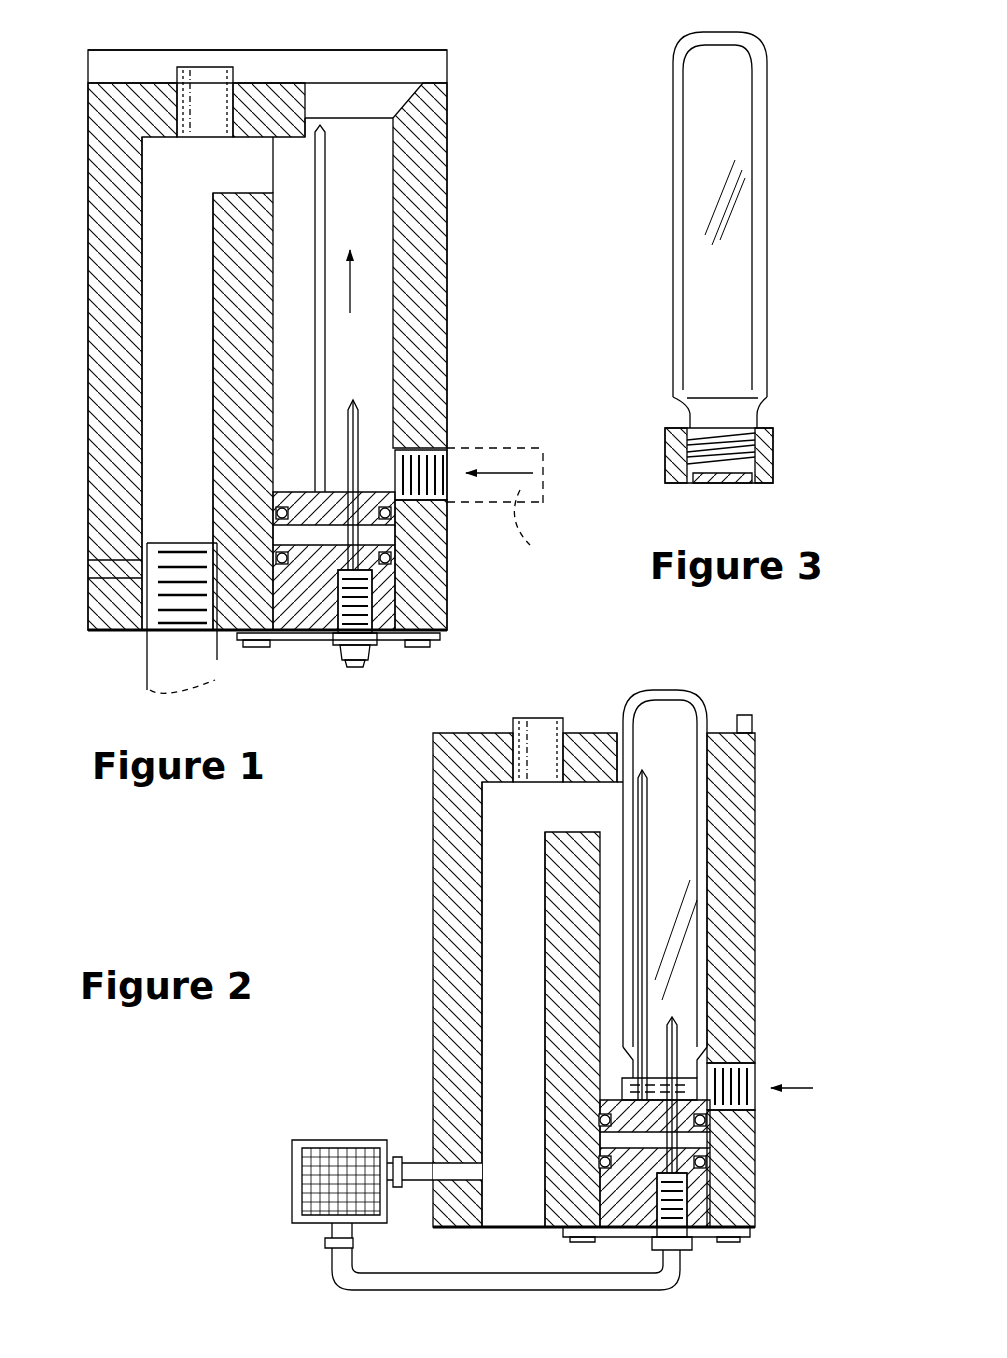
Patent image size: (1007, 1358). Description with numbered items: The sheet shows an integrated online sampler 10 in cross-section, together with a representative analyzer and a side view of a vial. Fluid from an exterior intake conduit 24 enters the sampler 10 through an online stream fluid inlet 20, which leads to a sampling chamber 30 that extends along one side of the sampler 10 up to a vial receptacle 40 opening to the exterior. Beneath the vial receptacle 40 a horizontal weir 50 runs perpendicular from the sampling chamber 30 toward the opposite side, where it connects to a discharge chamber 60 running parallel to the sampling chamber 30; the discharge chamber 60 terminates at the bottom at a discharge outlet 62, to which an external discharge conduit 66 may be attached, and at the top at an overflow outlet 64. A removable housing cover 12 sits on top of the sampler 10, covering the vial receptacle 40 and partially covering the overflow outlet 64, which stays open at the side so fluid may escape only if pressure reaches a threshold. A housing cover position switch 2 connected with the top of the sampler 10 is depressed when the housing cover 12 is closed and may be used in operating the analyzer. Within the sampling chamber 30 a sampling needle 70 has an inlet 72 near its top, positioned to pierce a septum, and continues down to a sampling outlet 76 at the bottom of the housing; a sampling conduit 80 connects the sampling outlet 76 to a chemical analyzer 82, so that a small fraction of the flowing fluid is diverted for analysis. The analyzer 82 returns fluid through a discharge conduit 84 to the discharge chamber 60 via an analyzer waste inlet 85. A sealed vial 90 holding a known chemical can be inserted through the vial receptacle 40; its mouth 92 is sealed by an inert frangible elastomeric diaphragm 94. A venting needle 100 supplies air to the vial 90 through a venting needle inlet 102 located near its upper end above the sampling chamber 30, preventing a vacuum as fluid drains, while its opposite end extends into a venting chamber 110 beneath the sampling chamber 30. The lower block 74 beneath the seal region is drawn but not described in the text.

In FIG. 1, the integrated online sampler 10 is at (75, 243).
In FIG. 2, the integrated online sampler 10 is at (418, 797).
In FIG. 1, the removable housing cover 12 is at (107, 75).
In FIG. 2, the housing cover position switch 2 is at (758, 745).
In FIG. 1, the online stream fluid inlet 20 is at (447, 460).
In FIG. 1, the exterior intake conduit 24 is at (530, 545).
In FIG. 1, the sampling chamber 30 is at (350, 277).
In FIG. 1, the vial receptacle 40 is at (345, 105).
In FIG. 1, the horizontal weir 50 is at (260, 181).
In FIG. 2, the horizontal weir 50 is at (572, 1029).
In FIG. 1, the discharge chamber 60 is at (180, 228).
In FIG. 2, the discharge chamber 60 is at (525, 905).
In FIG. 1, the discharge outlet 62 is at (160, 610).
In FIG. 1, the overflow outlet 64 is at (190, 120).
In FIG. 1, the external discharge conduit 66 is at (255, 652).
In FIG. 1, the sampling needle 70 is at (330, 545).
In FIG. 1, the inlet 72 is at (353, 405).
In FIG. 2, the inlet 72 is at (675, 1027).
In FIG. 1, the lower block 74 is at (405, 645).
In FIG. 2, the sampling outlet 76 is at (700, 1253).
In FIG. 2, the sampling conduit 80 is at (505, 1277).
In FIG. 2, the chemical analyzer 82 is at (340, 1140).
In FIG. 2, the discharge conduit 84 is at (418, 1163).
In FIG. 1, the analyzer waste inlet 85 is at (88, 568).
In FIG. 3, the sealed vial 90 is at (707, 95).
In FIG. 2, the sealed vial 90 is at (660, 720).
In FIG. 3, the mouth 92 is at (693, 415).
In FIG. 3, the inert frangible elastomeric diaphragm 94 is at (707, 483).
In FIG. 2, the inert frangible elastomeric diaphragm 94 is at (687, 1087).
In FIG. 1, the venting needle 100 is at (325, 217).
In FIG. 1, the venting needle inlet 102 is at (325, 137).
In FIG. 2, the venting needle inlet 102 is at (647, 776).
In FIG. 1, the venting chamber 110 is at (447, 520).
In FIG. 2, the venting chamber 110 is at (700, 1140).